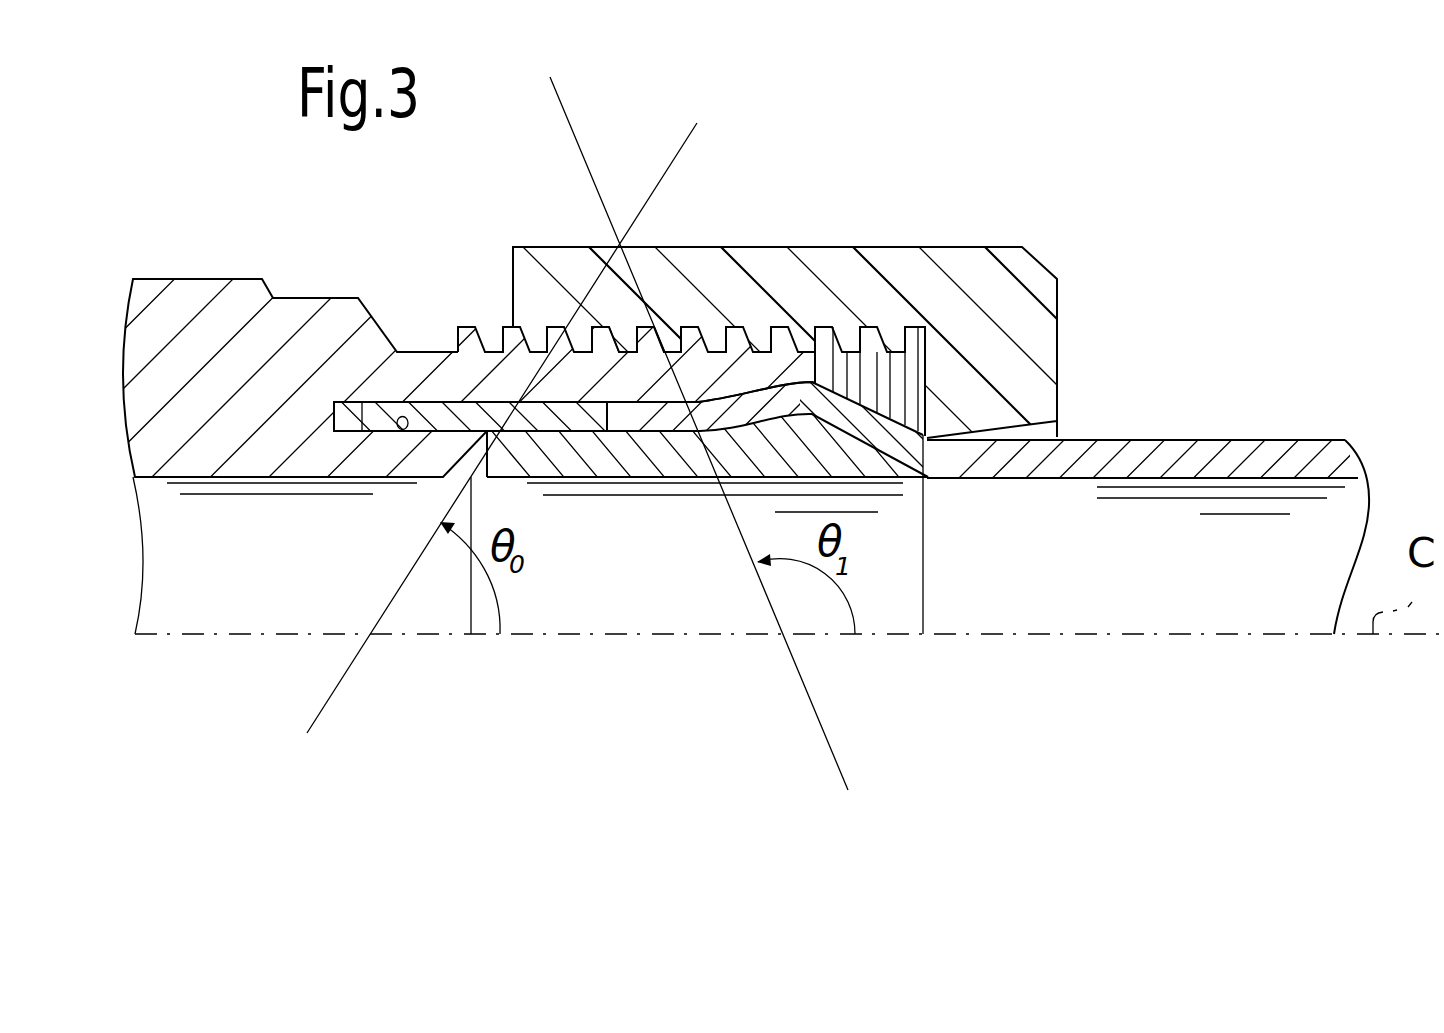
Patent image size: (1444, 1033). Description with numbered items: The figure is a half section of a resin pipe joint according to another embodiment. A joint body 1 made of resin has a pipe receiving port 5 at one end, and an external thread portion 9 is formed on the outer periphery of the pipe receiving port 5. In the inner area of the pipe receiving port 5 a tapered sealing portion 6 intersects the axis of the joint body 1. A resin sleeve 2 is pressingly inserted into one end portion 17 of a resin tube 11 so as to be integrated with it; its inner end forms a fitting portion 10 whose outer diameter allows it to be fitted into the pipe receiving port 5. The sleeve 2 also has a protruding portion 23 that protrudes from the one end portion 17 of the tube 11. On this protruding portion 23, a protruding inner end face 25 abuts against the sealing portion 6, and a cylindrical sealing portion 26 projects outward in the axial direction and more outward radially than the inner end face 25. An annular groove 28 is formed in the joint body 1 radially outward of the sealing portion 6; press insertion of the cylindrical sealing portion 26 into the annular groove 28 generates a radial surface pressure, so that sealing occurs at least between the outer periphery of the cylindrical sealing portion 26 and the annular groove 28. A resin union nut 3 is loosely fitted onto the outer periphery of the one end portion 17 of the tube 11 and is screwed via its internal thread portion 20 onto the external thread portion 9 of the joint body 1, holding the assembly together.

The joint body 1 is at (223, 279).
The sleeve 2 is at (697, 437).
The union nut 3 is at (1040, 256).
The pipe receiving port 5 is at (649, 340).
The sealing portion 6 is at (495, 450).
The external thread portion 9 is at (459, 327).
The fitting portion 10 is at (588, 452).
The tube 11 is at (1315, 440).
The one end portion of tube 17 is at (658, 425).
The internal thread portion 20 is at (829, 334).
The protruding portion 23 is at (550, 453).
The protruding inner end face 25 is at (487, 468).
The cylindrical sealing portion 26 is at (376, 410).
The annular groove 28 is at (397, 430).